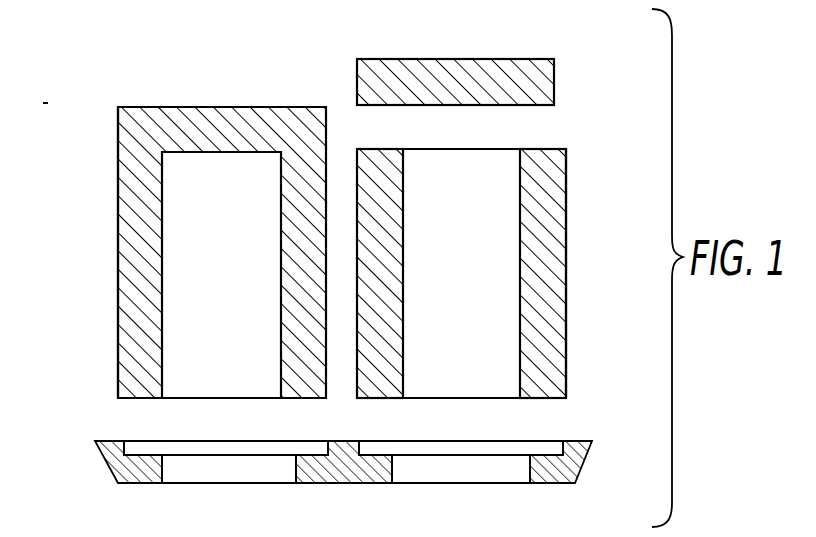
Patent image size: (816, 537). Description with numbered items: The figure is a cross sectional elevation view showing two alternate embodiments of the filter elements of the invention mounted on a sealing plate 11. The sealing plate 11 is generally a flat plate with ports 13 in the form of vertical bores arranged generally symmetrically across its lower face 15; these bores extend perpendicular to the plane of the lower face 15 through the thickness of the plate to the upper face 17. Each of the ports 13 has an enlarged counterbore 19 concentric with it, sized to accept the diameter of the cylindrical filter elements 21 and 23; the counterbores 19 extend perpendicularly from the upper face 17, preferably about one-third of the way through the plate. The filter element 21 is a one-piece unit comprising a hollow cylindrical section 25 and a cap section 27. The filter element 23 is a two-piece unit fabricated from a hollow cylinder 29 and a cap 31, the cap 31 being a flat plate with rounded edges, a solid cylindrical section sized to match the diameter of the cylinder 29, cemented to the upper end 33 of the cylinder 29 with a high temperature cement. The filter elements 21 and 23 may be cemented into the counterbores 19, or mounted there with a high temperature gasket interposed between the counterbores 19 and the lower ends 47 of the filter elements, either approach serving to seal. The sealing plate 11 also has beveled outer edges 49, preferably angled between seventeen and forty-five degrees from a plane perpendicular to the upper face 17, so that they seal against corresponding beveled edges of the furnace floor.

The sealing plate 11 is at (602, 454).
The ports 13 is at (222, 472).
The lower face 15 is at (352, 477).
The upper face 17 is at (349, 442).
The counterbores 19 is at (125, 446).
The filter element 21 is at (100, 243).
The filter element 23 is at (580, 296).
The hollow cylindrical section 25 is at (118, 337).
The cap section 27 is at (220, 107).
The hollow cylinder 29 is at (566, 203).
The cap 31 is at (440, 59).
The upper end 33 is at (547, 150).
The lower ends 47 is at (126, 405).
The beveled outer edges 49 is at (108, 468).